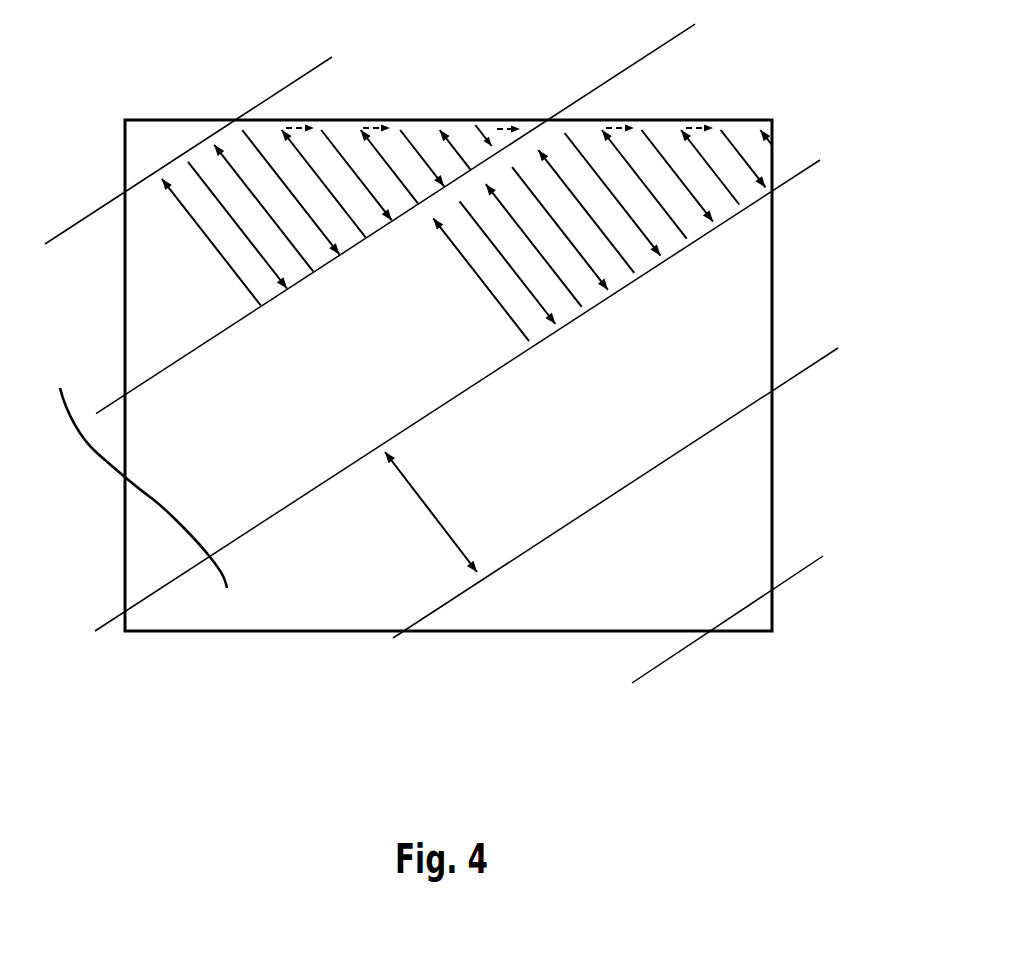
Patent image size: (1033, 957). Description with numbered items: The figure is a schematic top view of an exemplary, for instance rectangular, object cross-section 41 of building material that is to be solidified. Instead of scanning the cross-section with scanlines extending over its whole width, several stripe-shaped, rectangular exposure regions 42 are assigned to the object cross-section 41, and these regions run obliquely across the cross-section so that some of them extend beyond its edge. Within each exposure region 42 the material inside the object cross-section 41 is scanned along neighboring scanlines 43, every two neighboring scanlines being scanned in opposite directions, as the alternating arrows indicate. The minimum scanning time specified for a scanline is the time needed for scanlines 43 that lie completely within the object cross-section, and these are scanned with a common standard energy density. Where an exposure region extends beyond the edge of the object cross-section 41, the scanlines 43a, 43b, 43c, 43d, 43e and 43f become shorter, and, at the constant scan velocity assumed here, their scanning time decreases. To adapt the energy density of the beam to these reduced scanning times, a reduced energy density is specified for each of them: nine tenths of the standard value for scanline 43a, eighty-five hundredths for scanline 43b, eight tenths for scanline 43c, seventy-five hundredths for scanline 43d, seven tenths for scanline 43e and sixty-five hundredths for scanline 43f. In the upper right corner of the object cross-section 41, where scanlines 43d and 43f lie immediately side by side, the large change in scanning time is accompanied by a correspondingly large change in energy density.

The object cross-section 41 is at (487, 632).
The exposure regions 42 is at (142, 340).
The scanlines 43 is at (227, 265).
The scanline 43a is at (298, 157).
The scanline 43b is at (338, 155).
The scanline 43c is at (404, 189).
The scanline 43d is at (441, 132).
The scanline 43e is at (465, 142).
The scanline 43f is at (497, 129).